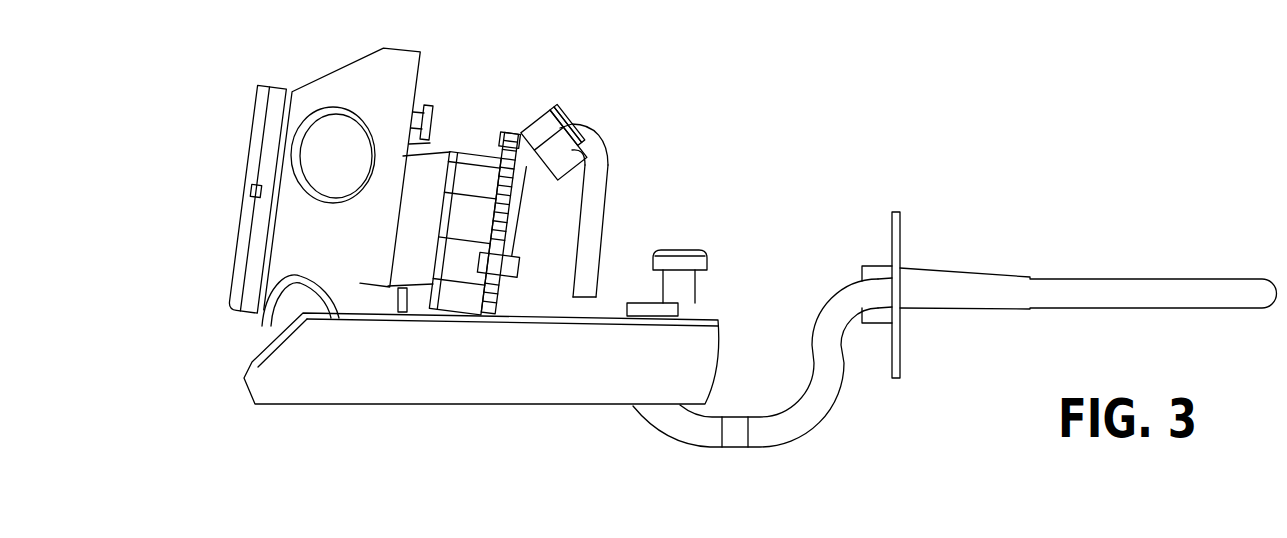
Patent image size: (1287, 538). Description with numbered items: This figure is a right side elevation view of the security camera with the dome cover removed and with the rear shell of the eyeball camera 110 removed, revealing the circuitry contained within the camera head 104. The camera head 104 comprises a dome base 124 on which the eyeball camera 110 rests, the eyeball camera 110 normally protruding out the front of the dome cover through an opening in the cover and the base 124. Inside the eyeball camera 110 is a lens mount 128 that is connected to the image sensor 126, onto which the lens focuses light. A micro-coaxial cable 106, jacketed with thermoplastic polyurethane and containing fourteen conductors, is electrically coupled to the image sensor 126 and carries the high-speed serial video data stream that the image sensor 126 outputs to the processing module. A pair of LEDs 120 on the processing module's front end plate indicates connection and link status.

The camera head 104 is at (244, 335).
The micro-coaxial cable 106 is at (605, 148).
The eyeball camera 110 is at (366, 247).
The LEDs 120 is at (897, 230).
The dome base 124 is at (390, 387).
The image sensor 126 is at (500, 125).
The lens mount 128 is at (432, 172).